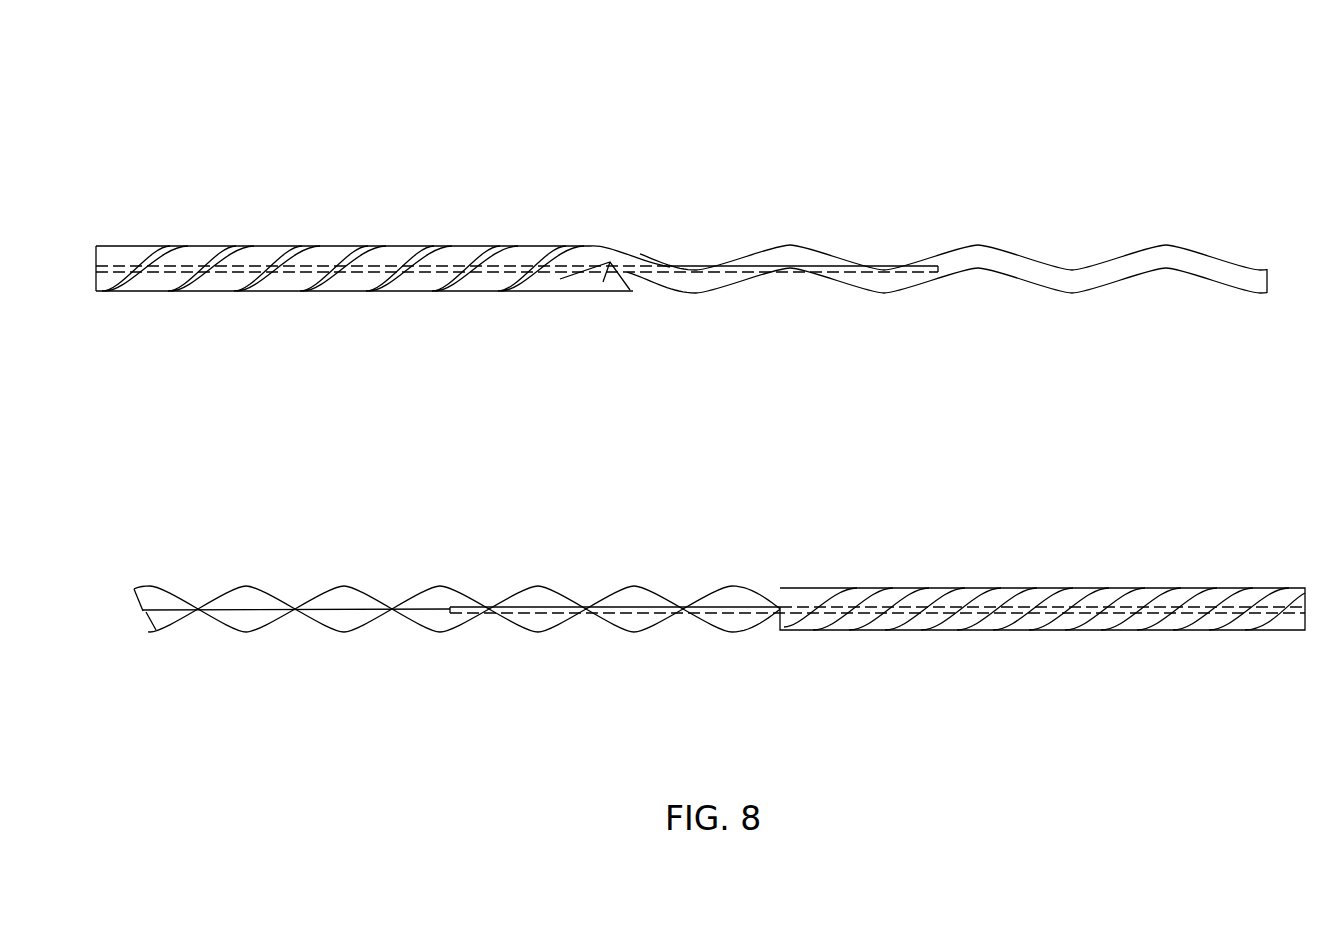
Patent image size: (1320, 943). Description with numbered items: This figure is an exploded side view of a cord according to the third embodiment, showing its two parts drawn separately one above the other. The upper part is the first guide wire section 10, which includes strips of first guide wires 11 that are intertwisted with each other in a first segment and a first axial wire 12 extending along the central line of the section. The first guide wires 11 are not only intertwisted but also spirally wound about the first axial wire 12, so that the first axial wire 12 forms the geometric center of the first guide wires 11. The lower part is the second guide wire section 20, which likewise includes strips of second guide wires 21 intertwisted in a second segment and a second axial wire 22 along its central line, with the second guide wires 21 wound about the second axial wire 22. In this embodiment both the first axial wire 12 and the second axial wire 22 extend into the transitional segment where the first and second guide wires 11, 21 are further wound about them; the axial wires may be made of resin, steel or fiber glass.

The first guide wire section 10 is at (1043, 120).
The first guide wires 11 is at (342, 265).
The first axial wire 12 is at (695, 265).
The second guide wire section 20 is at (1127, 462).
The second guide wires 21 is at (932, 590).
The second axial wire 22 is at (634, 607).